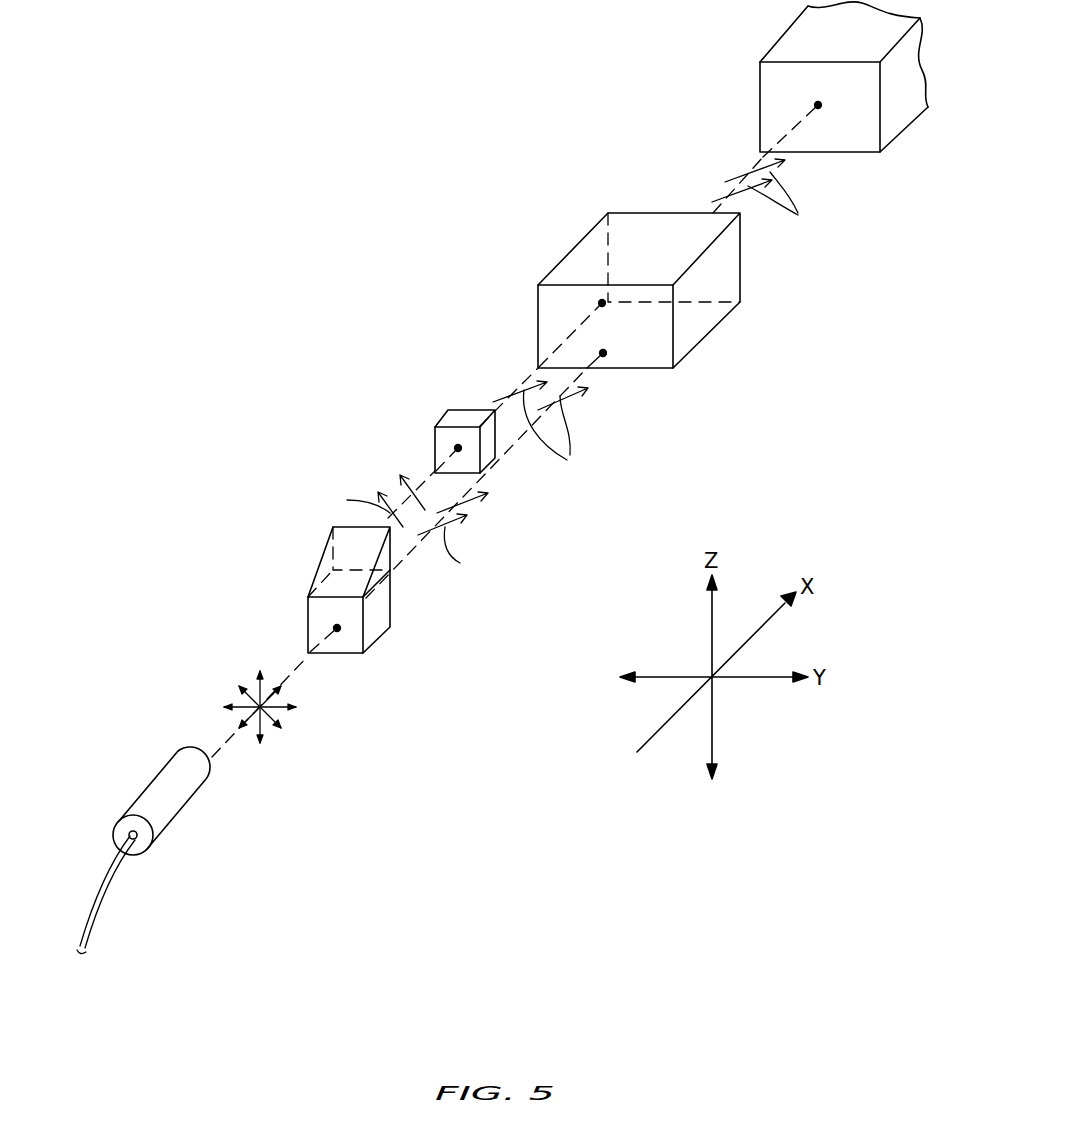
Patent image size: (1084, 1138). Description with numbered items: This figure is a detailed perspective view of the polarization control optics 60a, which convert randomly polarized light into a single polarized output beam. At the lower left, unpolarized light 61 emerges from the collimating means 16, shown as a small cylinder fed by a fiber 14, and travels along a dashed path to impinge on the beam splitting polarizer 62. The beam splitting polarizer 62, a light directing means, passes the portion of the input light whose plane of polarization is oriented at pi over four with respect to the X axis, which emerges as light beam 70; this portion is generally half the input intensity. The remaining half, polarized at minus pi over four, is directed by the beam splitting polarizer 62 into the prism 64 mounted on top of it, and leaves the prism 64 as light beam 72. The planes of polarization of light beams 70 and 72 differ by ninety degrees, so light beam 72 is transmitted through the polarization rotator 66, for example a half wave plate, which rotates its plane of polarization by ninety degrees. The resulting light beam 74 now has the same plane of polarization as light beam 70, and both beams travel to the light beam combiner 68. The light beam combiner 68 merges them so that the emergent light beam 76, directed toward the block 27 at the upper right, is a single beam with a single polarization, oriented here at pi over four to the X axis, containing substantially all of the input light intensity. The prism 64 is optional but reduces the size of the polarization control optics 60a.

The optical fiber 14 is at (106, 880).
The collimating means 16 is at (153, 783).
The detector block 27 is at (760, 100).
The polarization control optics 60a is at (457, 236).
The unpolarized light 61 is at (300, 670).
The beam splitting polarizer 62 is at (380, 625).
The prism 64 is at (318, 580).
The polarization rotator 66 is at (435, 440).
The light beam combiner 68 is at (728, 308).
The light beam 70 is at (488, 473).
The light beam 72 is at (423, 483).
The light beam 74 is at (533, 373).
The emergent light beam 76 is at (717, 212).